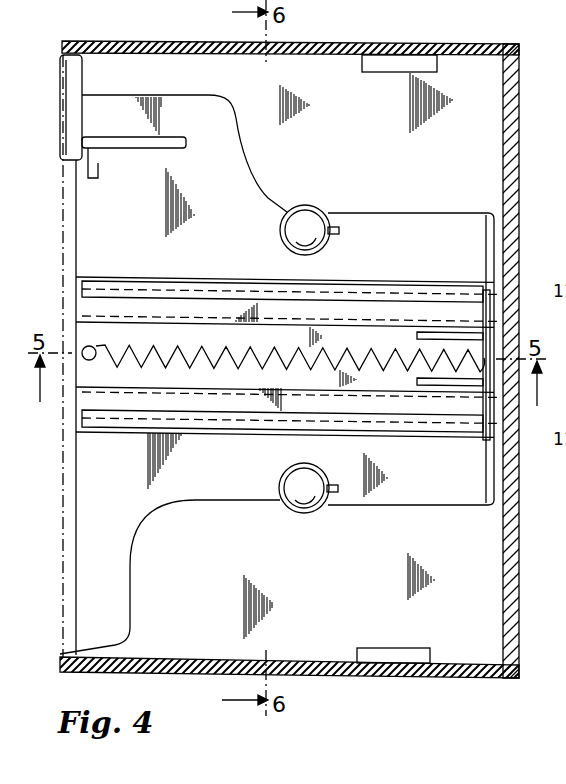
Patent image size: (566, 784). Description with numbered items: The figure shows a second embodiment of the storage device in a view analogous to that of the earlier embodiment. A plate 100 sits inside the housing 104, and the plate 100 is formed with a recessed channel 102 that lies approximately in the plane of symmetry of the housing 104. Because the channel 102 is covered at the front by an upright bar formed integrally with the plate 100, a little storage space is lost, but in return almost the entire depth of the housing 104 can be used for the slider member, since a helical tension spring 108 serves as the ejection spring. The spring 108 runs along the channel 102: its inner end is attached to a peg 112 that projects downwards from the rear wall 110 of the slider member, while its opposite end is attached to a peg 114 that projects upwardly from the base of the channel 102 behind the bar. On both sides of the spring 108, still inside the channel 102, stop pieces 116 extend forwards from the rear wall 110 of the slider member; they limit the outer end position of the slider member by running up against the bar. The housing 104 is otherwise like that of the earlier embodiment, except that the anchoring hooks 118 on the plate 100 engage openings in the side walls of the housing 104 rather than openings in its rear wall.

The plate 100 is at (482, 557).
The recessed channel 102 is at (288, 327).
The housing 104 is at (487, 46).
The helical tension spring 108 is at (185, 343).
The rear wall of the slider member 110 is at (494, 254).
The peg 112 is at (490, 322).
The peg 114 is at (90, 346).
The stop pieces 116 is at (430, 333).
The anchoring hooks 118 is at (412, 48).